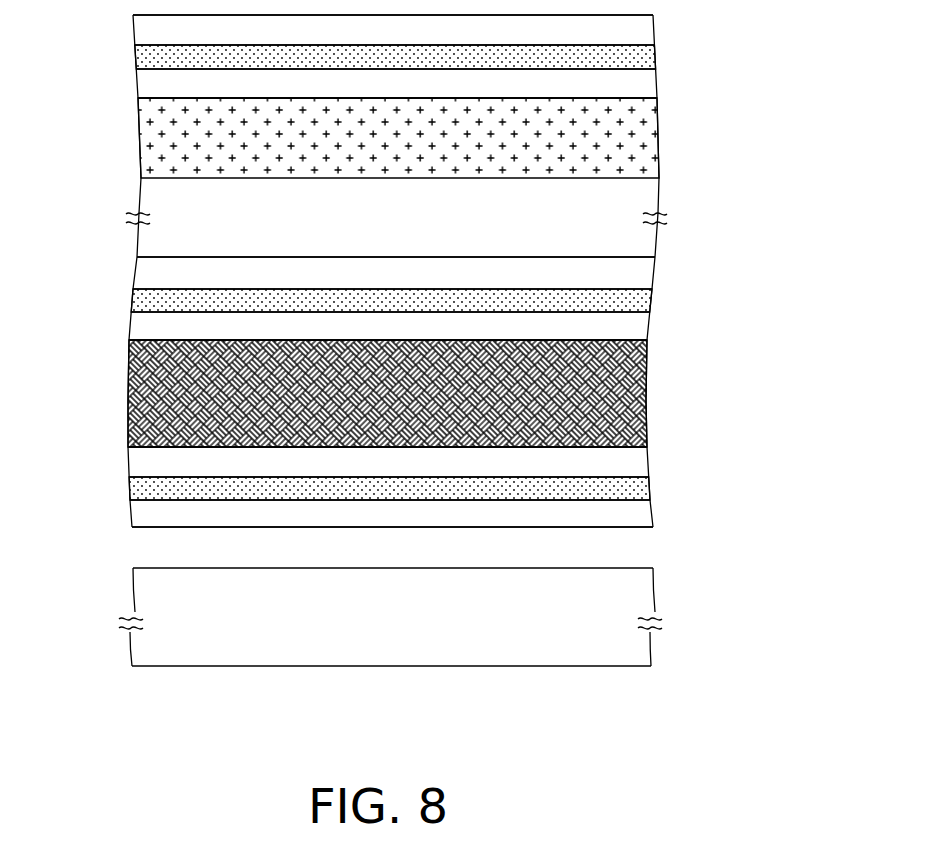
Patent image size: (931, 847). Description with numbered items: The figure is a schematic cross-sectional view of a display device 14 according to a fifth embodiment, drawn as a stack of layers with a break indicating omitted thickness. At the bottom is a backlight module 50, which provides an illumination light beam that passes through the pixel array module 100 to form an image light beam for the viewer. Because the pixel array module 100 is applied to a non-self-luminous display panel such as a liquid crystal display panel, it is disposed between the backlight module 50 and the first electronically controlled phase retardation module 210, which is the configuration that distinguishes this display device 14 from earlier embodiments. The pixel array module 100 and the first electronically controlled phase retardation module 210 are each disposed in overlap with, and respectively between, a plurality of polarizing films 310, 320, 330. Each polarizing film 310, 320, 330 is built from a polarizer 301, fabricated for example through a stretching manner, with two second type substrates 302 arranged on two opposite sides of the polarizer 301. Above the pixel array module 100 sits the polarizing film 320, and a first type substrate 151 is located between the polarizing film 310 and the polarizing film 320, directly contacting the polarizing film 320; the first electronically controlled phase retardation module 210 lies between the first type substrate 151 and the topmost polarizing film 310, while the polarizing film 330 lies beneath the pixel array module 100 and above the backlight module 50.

The display device 14 is at (767, 758).
The backlight module 50 is at (115, 568).
The pixel array module 100 is at (115, 340).
The first type substrate 151 is at (645, 196).
The first electronically controlled phase retardation module 210 is at (115, 98).
The polarizer 301 is at (638, 57).
The second type substrate 302 is at (637, 31).
The polarizing film 310 is at (115, 15).
The polarizing film 320 is at (115, 257).
The polarizing film 330 is at (115, 447).